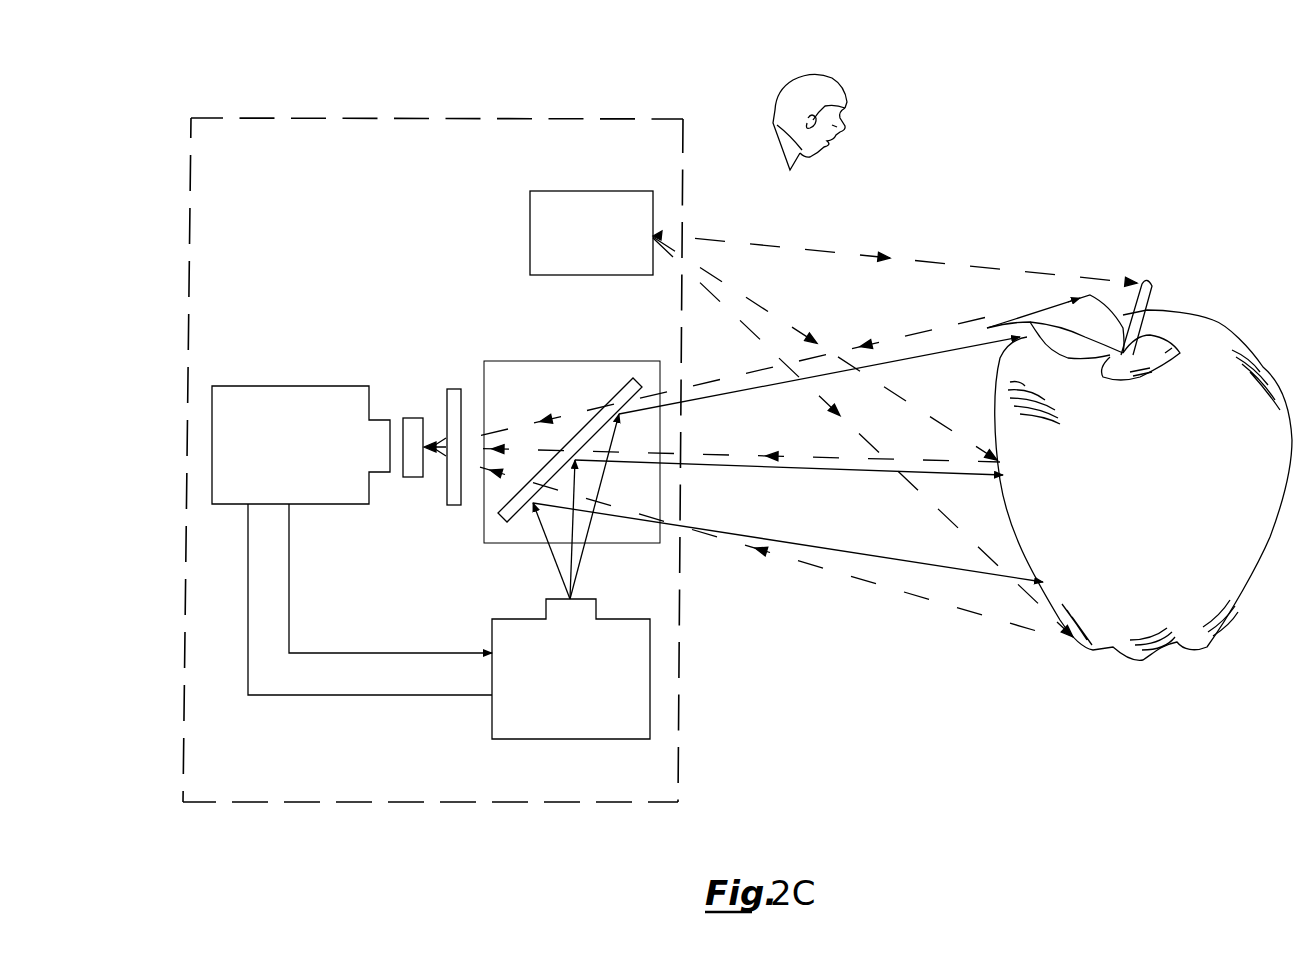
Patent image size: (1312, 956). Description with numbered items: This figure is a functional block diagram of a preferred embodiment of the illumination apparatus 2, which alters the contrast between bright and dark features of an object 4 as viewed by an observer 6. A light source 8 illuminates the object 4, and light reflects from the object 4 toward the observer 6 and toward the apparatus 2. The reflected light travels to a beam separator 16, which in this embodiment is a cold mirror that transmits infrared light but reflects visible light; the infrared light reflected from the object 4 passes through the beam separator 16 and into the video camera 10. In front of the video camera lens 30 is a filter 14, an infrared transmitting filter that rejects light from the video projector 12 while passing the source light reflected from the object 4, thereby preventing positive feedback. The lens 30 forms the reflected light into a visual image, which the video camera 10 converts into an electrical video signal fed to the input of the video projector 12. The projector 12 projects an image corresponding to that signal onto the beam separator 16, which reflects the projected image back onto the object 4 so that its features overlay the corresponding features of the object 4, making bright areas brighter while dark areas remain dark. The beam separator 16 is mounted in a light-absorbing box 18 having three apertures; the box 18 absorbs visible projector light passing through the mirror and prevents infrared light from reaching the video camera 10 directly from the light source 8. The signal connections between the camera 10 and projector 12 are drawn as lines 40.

The illumination apparatus 2 is at (270, 117).
The object 4 is at (1215, 330).
The observer 6 is at (775, 111).
The light source 8 is at (612, 191).
The video camera 10 is at (318, 505).
The video projector 12 is at (492, 635).
The filter 14 is at (452, 388).
The beam separator 16 is at (495, 522).
The light-absorbing box 18 is at (527, 361).
The video camera lens 30 is at (408, 485).
The connecting cables 40 is at (290, 696).